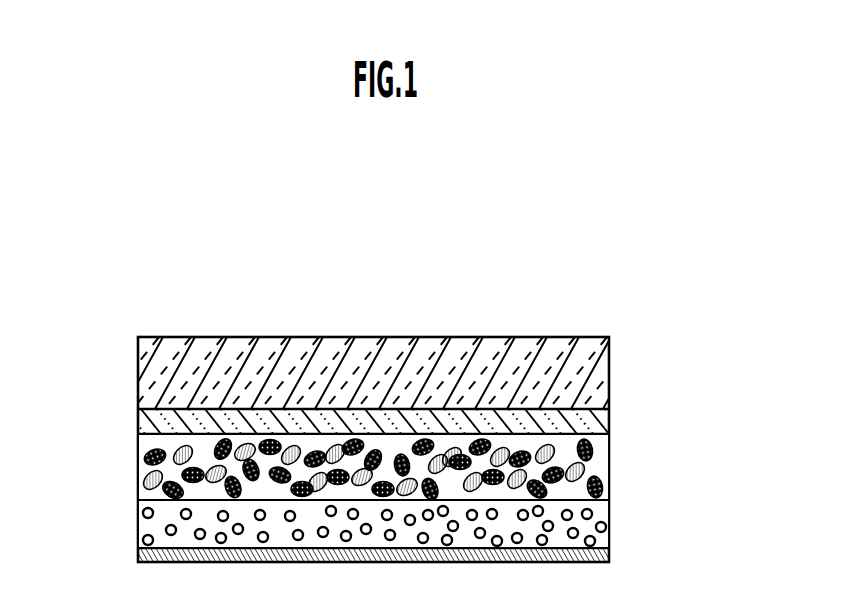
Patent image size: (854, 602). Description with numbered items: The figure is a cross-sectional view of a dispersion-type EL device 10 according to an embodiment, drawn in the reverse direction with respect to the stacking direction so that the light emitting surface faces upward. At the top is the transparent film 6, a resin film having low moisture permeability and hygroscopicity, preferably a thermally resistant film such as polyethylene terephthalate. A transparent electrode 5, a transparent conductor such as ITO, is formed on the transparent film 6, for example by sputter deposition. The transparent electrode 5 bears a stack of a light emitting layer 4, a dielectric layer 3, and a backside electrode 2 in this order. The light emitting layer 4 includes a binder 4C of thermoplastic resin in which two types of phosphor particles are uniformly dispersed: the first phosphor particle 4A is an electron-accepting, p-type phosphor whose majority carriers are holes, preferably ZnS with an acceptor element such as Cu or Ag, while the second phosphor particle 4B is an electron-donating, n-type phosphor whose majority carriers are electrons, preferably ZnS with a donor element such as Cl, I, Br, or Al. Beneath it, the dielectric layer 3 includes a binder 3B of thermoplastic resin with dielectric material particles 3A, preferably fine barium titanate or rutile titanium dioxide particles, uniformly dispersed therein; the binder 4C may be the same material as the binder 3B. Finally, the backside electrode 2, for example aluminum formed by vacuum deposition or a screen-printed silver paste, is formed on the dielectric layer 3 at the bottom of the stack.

The dispersion-type EL device 10 is at (578, 266).
The backside electrode 2 is at (603, 557).
The dielectric layer 3 is at (368, 544).
The dielectric material particle 3A is at (147, 547).
The binder 3B is at (150, 523).
The light emitting layer 4 is at (368, 455).
The first phosphor particle 4A is at (150, 483).
The second phosphor particle 4B is at (147, 460).
The binder 4C is at (155, 442).
The transparent electrode 5 is at (607, 425).
The transparent film 6 is at (603, 378).